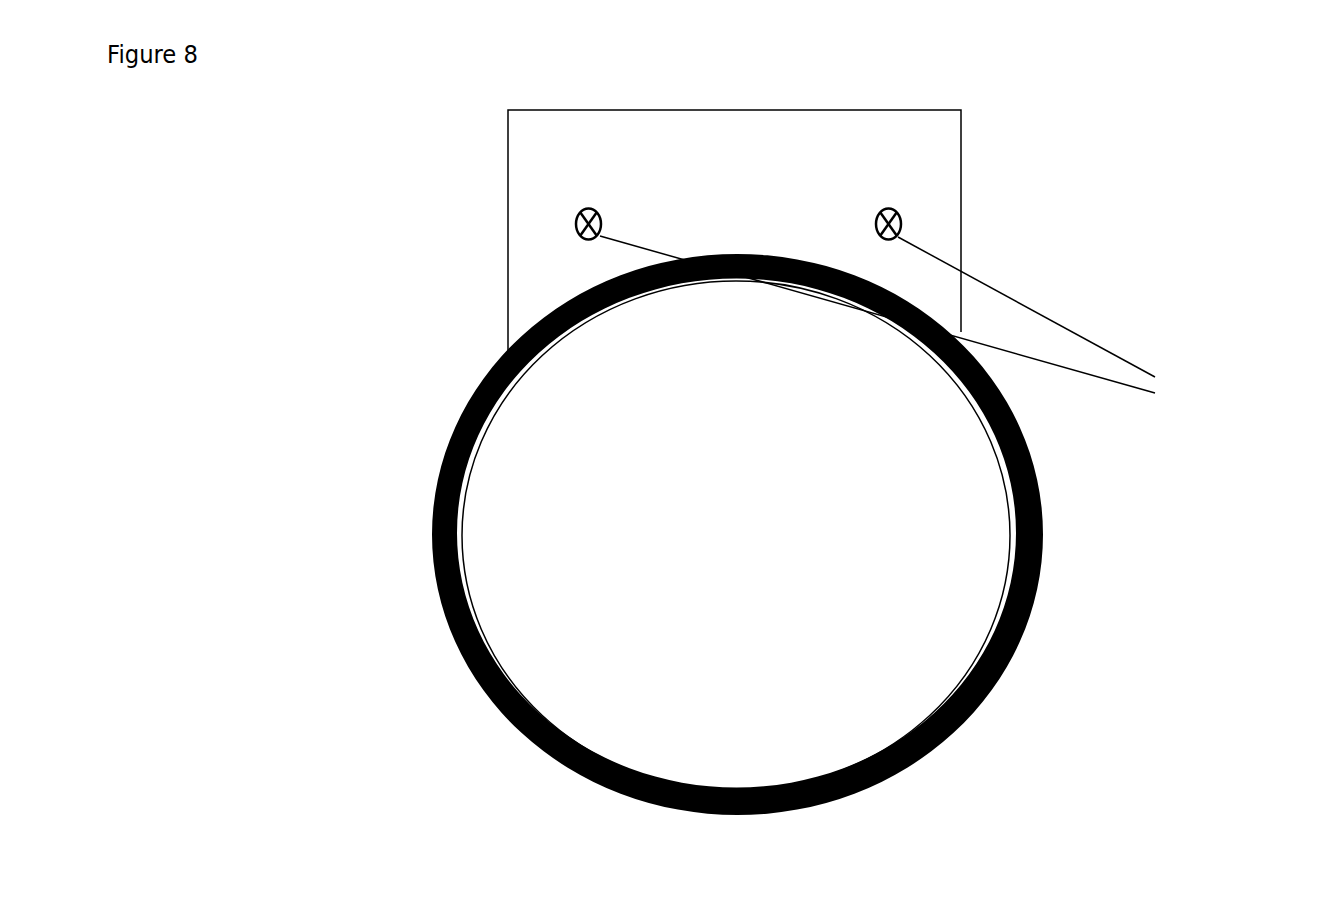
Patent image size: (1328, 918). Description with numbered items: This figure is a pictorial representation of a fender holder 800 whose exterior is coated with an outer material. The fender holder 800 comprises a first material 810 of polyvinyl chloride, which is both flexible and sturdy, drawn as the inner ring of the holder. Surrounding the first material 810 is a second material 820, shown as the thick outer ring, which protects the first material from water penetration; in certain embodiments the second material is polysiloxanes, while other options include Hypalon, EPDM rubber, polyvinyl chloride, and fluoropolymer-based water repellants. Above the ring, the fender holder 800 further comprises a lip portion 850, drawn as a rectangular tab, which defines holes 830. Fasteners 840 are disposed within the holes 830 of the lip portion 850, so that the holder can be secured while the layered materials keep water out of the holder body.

The fender holder 800 is at (1291, 140).
The first material 810 is at (508, 396).
The second material 820 is at (433, 503).
The holes 830 is at (877, 211).
The fasteners 840 is at (906, 321).
The lip portion 850 is at (508, 250).